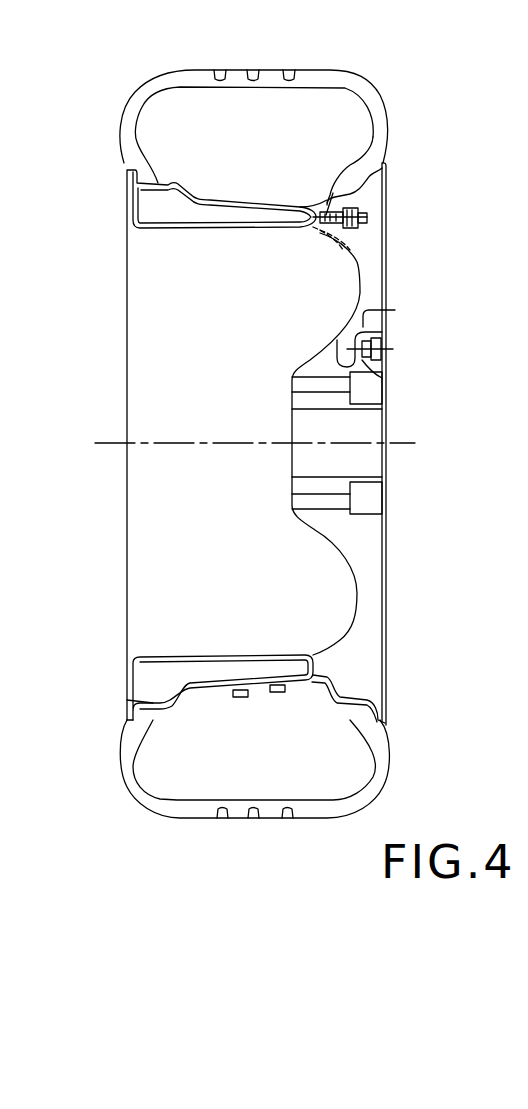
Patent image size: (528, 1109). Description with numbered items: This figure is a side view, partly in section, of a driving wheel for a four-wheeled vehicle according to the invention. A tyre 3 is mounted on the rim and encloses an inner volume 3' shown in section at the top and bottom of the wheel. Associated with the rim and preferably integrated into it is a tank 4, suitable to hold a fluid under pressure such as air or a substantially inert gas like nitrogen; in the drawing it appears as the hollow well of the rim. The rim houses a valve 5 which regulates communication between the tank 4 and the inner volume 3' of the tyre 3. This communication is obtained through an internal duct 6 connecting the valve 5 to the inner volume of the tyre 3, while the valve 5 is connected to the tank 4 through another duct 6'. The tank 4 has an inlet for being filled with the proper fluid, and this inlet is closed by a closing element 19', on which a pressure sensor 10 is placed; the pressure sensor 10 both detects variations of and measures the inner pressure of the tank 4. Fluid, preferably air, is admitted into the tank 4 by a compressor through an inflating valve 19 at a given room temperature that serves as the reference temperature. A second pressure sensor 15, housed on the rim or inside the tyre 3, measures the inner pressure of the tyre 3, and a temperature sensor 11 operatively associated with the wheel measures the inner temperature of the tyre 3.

The tyre 3 is at (298, 434).
The inner volume of the tyre 3' is at (231, 424).
The tank 4 is at (160, 230).
The valve 5 is at (386, 202).
The internal duct 6 is at (390, 163).
The duct 6' is at (430, 444).
The pressure sensor 10 is at (395, 310).
The temperature sensor 11 is at (238, 697).
The second pressure sensor 15 is at (281, 693).
The inflating valve 19 is at (390, 370).
The closing element 19' is at (416, 354).